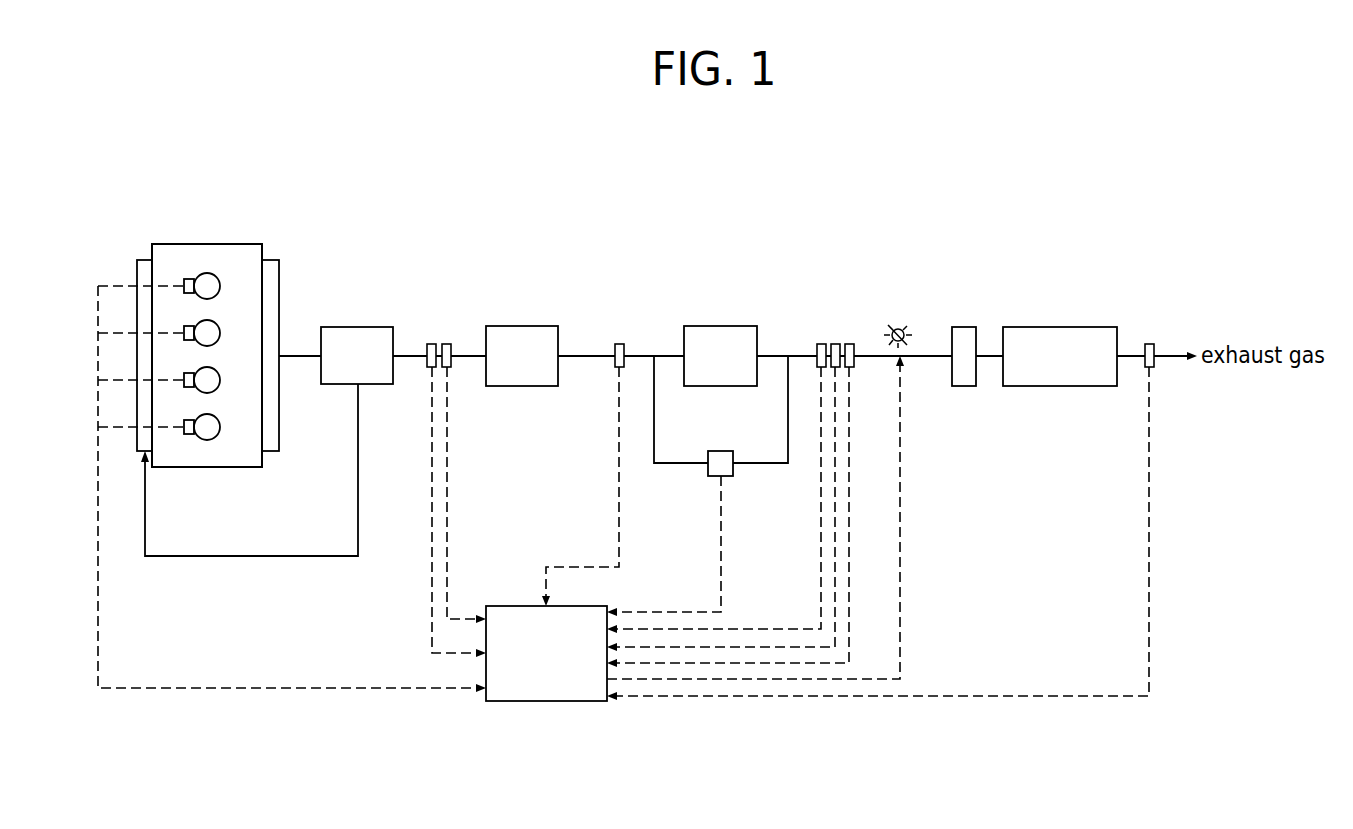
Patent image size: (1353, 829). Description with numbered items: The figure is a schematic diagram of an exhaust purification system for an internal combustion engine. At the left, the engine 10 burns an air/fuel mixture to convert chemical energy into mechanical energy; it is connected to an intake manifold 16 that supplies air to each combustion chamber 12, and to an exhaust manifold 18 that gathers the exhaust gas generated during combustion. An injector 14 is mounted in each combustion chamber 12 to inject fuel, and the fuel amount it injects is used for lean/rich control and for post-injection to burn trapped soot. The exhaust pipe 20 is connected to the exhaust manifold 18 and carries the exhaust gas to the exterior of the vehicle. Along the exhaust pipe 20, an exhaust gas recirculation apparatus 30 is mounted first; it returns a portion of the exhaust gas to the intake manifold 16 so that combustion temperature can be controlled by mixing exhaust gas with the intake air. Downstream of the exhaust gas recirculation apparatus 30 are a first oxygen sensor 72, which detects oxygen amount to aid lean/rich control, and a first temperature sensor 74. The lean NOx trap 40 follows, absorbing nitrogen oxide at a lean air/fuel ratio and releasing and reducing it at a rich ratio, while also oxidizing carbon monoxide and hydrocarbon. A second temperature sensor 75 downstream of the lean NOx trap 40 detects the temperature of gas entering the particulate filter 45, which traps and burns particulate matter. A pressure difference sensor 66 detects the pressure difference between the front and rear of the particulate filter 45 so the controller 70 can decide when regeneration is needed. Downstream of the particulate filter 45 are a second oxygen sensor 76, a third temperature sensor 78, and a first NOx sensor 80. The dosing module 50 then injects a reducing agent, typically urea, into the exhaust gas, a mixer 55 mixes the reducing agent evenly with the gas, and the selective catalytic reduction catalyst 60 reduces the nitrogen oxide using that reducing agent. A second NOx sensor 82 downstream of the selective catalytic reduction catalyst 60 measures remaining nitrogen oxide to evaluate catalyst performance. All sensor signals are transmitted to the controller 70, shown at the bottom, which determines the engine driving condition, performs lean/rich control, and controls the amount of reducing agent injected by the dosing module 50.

The engine 10 is at (240, 228).
The combustion chamber 12 is at (207, 273).
The injector 14 is at (190, 279).
The intake manifold 16 is at (145, 260).
The exhaust manifold 18 is at (270, 260).
The exhaust pipe 20 is at (299, 356).
The exhaust gas recirculation apparatus 30 is at (356, 327).
The lean NOx trap 40 is at (521, 326).
The particulate filter 45 is at (720, 326).
The dosing module 50 is at (901, 328).
The mixer 55 is at (964, 327).
The selective catalytic reduction catalyst 60 is at (1060, 327).
The pressure difference sensor 66 is at (735, 473).
The controller 70 is at (546, 701).
The first oxygen sensor 72 is at (431, 344).
The first temperature sensor 74 is at (447, 344).
The second temperature sensor 75 is at (619, 344).
The second oxygen sensor 76 is at (821, 344).
The third temperature sensor 78 is at (835, 344).
The first NOx sensor 80 is at (849, 344).
The second NOx sensor 82 is at (1149, 344).